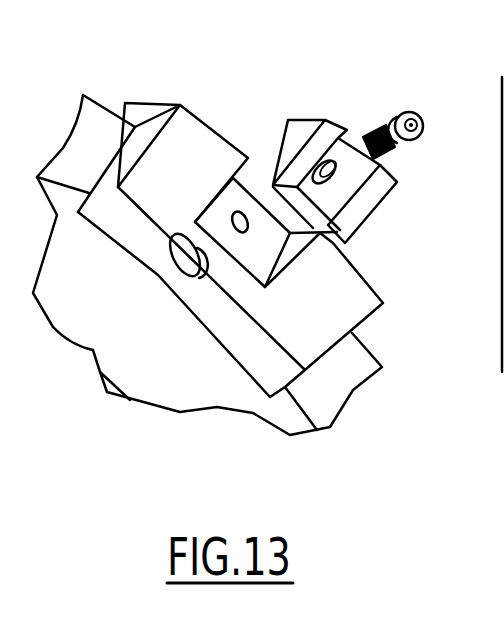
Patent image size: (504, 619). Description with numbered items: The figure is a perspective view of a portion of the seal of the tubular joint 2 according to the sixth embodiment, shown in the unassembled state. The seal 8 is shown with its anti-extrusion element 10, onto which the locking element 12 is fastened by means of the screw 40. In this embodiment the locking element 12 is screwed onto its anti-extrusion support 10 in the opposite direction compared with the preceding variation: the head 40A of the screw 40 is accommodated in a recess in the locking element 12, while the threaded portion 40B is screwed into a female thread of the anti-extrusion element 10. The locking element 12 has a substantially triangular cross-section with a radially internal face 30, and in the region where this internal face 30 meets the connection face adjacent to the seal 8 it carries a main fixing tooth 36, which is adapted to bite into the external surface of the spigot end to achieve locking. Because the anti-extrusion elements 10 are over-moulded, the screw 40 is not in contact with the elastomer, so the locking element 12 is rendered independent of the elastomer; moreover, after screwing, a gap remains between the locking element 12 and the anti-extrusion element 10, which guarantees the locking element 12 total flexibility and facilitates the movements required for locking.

The tubular joint 2 is at (499, 187).
The seal 8 is at (95, 145).
The anti-extrusion element 10 is at (198, 142).
The locking element 12 is at (333, 120).
The radially internal face 30 is at (363, 203).
The main fixing tooth 36 is at (335, 242).
The screw 40 is at (420, 103).
The head 40A is at (422, 141).
The threaded portion 40B is at (387, 157).